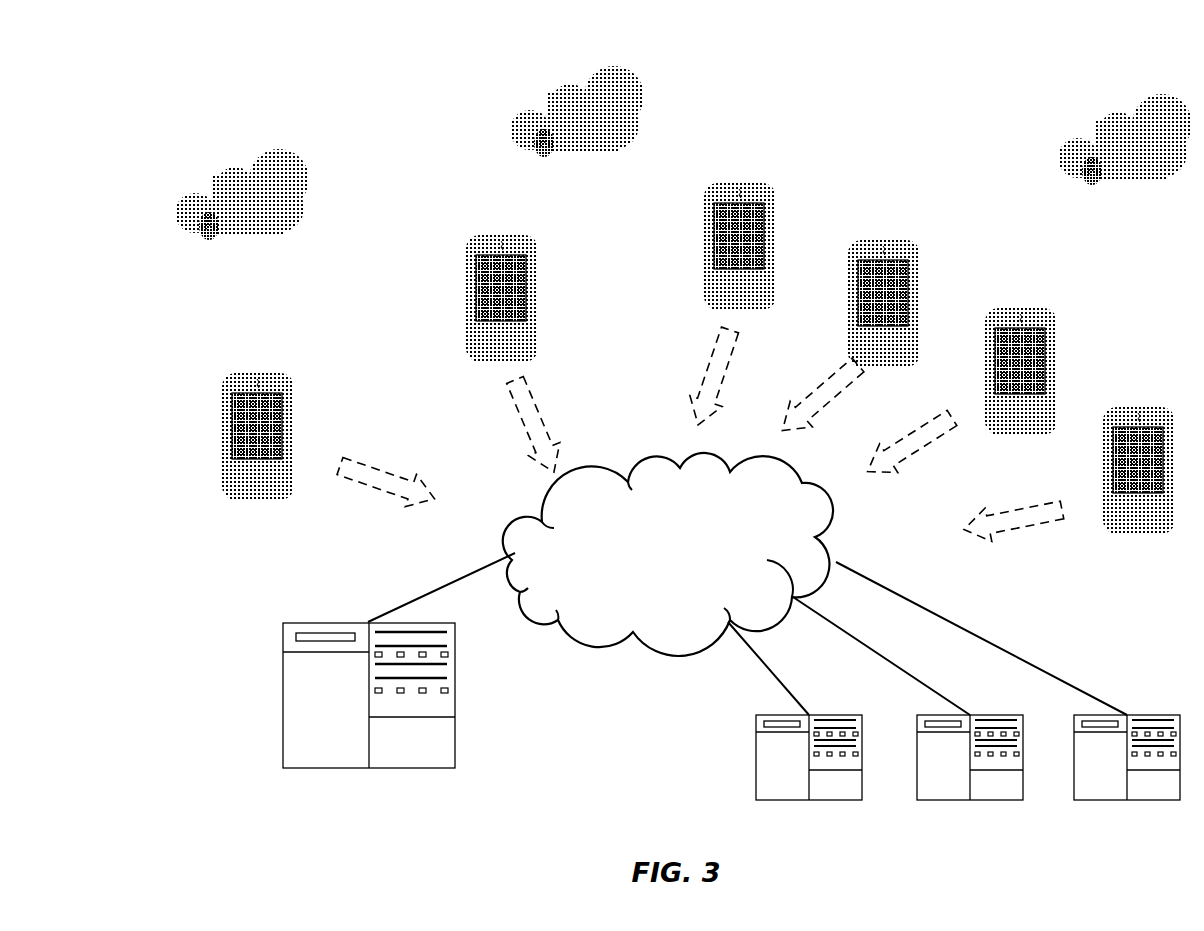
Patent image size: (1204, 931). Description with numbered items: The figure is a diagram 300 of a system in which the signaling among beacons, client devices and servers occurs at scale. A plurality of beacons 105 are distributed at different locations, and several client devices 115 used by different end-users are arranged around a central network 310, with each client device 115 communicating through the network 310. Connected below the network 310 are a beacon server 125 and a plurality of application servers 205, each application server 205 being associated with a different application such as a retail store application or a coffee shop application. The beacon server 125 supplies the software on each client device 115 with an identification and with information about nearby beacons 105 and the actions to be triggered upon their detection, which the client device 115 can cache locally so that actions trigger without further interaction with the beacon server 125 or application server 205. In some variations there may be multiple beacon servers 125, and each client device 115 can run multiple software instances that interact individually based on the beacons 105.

The diagram 300 is at (190, 71).
The beacon 105 is at (683, 169).
The client device 115 is at (698, 345).
The network 310 is at (668, 554).
The beacon server 125 is at (399, 684).
The application server 205 is at (954, 697).